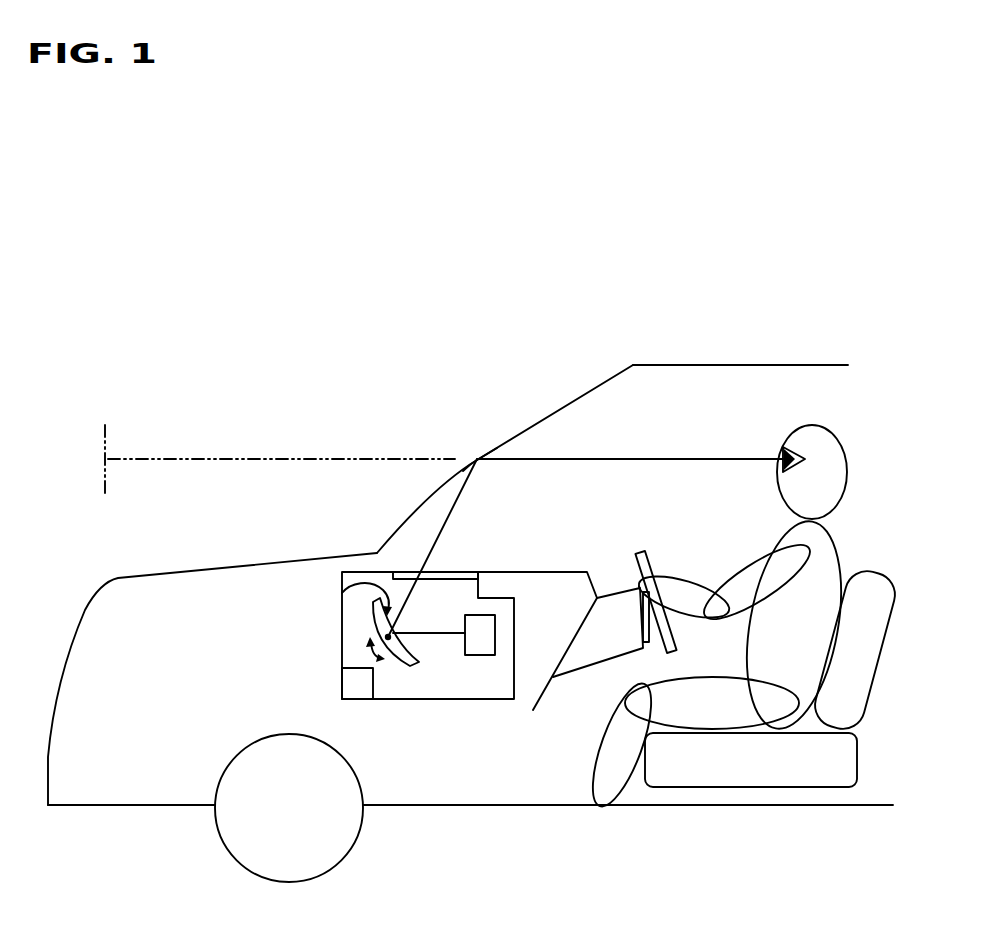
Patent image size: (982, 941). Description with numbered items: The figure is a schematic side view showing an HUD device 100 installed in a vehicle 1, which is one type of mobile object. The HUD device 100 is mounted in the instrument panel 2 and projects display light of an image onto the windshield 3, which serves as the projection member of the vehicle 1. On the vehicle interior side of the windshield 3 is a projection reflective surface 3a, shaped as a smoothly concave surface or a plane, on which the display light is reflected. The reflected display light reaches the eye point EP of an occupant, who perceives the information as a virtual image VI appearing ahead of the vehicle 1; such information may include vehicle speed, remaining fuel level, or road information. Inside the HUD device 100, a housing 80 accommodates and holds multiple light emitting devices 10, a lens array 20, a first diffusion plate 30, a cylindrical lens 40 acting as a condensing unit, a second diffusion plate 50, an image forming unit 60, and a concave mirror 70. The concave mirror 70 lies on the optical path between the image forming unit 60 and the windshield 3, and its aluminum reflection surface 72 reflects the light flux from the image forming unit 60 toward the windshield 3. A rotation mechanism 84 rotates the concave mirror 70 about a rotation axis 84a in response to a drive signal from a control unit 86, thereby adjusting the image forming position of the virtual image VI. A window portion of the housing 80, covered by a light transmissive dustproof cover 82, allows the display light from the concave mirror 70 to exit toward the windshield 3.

The vehicle 1 is at (820, 364).
The instrument panel 2 is at (552, 569).
The windshield 3 is at (548, 415).
The projection reflective surface 3a is at (480, 457).
The light emitting devices 10 is at (475, 694).
The lens array 20 is at (475, 694).
The first diffusion plate 30 is at (475, 694).
The cylindrical lens 40 is at (475, 694).
The second diffusion plate 50 is at (475, 694).
The image forming unit 60 is at (483, 655).
The concave mirror 70 is at (375, 614).
The reflection surface 72 is at (342, 593).
The housing 80 is at (514, 627).
The dustproof cover 82 is at (472, 569).
The rotation mechanism 84 is at (376, 666).
The rotation axis 84a is at (400, 659).
The control unit 86 is at (316, 653).
The HUD device 100 is at (399, 616).
The eye point EP is at (783, 447).
The virtual image VI is at (108, 440).